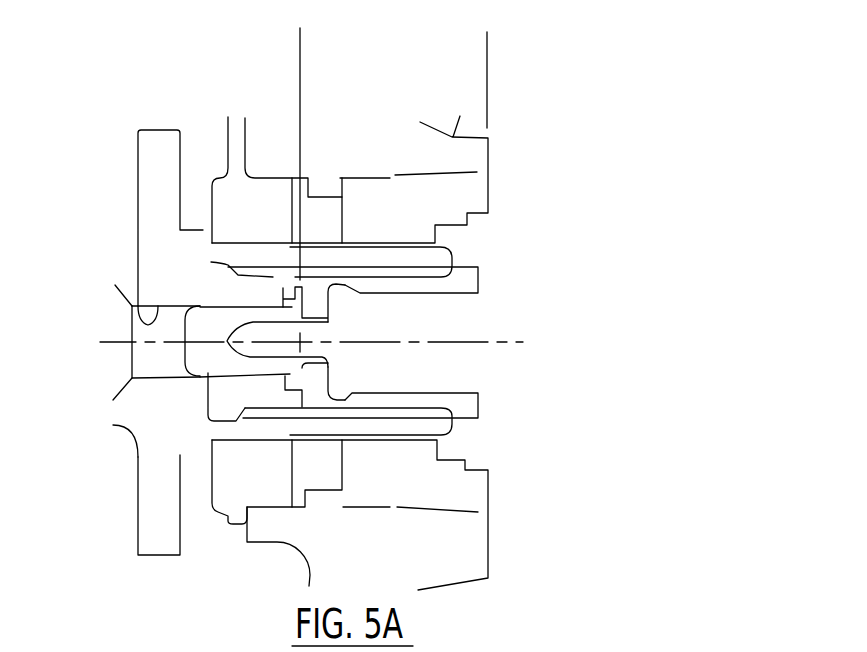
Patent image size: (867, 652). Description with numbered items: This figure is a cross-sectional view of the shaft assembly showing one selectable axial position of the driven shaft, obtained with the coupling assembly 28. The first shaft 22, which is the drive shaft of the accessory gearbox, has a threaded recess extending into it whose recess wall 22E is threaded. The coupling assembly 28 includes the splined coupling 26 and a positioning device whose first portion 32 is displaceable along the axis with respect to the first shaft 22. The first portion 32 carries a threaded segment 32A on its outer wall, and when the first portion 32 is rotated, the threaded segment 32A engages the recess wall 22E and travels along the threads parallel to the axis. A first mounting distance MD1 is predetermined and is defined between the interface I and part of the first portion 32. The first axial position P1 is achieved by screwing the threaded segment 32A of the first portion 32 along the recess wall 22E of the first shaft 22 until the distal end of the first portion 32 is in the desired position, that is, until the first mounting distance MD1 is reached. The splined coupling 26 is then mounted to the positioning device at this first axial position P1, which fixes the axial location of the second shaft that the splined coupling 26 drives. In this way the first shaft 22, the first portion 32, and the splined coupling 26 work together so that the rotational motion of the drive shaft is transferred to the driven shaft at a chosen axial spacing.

The first shaft 22 is at (147, 190).
The recess wall 22E is at (115, 257).
The first portion 32 is at (205, 382).
The threaded segment 32A is at (220, 307).
The coupling assembly 28 is at (283, 288).
The interface I is at (490, 187).
The splined coupling 26 is at (487, 264).
The first axial position P1 is at (302, 345).
The first mounting distance MD1 is at (487, 42).